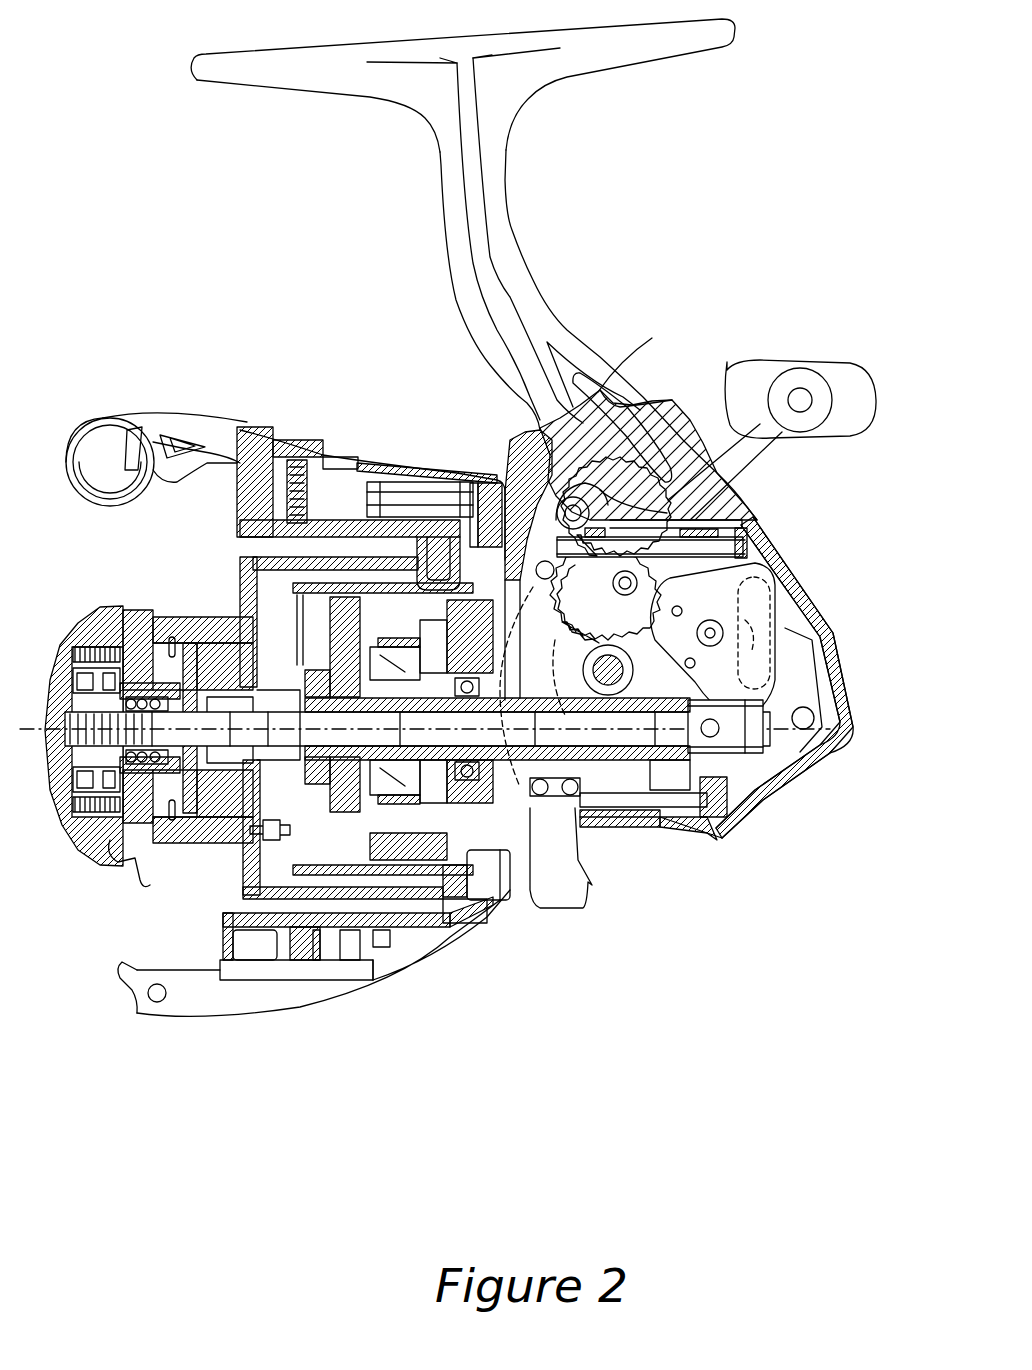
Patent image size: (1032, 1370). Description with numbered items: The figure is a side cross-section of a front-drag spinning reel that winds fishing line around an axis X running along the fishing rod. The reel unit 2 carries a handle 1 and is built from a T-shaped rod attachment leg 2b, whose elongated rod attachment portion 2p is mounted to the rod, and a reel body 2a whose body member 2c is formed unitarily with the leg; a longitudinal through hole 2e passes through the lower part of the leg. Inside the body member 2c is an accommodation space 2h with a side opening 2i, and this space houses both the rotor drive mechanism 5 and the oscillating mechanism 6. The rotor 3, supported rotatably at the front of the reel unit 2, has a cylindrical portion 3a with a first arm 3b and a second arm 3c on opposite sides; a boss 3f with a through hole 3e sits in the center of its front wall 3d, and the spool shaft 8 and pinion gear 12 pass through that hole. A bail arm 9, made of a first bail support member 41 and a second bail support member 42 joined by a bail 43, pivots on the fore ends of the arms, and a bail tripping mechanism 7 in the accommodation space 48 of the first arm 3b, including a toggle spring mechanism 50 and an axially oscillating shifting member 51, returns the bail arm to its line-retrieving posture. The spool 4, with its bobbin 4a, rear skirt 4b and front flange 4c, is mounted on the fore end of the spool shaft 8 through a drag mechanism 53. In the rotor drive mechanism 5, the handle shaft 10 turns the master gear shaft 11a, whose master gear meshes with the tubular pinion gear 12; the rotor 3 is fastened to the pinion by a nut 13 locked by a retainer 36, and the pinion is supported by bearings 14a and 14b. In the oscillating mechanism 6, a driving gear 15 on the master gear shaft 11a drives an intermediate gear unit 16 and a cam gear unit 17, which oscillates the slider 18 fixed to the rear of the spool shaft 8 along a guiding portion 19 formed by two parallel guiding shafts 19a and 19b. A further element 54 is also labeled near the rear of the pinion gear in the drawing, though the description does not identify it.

The handle 1 is at (765, 443).
The reel unit 2 is at (620, 340).
The reel body 2a is at (852, 683).
The rod attachment leg 2b is at (514, 249).
The body member 2c is at (465, 378).
The through hole 2e is at (640, 377).
The accommodation space 2h is at (843, 733).
The opening 2i is at (793, 750).
The rod attachment portion 2p is at (635, 48).
The rotor 3 is at (505, 933).
The cylindrical portion 3a is at (372, 500).
The first arm 3b is at (233, 525).
The second arm 3c is at (330, 933).
The front wall 3d is at (333, 607).
The through hole 3e is at (276, 826).
The boss 3f is at (407, 900).
The spool 4 is at (168, 850).
The bobbin 4a is at (208, 840).
The skirt 4b is at (303, 887).
The front flange 4c is at (113, 867).
The rotor drive mechanism 5 is at (550, 577).
The oscillating mechanism 6 is at (740, 830).
The bail tripping mechanism 7 is at (427, 480).
The spool shaft 8 is at (507, 883).
The bail arm 9 is at (97, 514).
The handle shaft 10 is at (707, 838).
The master gear shaft 11a is at (573, 813).
The pinion gear 12 is at (543, 905).
The nut 13 is at (300, 700).
The bearing 14a is at (453, 920).
The bearing 14b is at (580, 880).
The driving gear 15 is at (663, 833).
The intermediate gear unit 16 is at (657, 462).
The cam gear unit 17 is at (760, 810).
The slider 18 is at (763, 597).
The guiding portion 19 is at (866, 499).
The guiding shaft 19a is at (757, 517).
The guiding shaft 19b is at (780, 600).
The retainer 36 is at (320, 900).
The first bail support member 41 is at (178, 418).
The second bail support member 42 is at (245, 1000).
The bail 43 is at (118, 426).
The accommodation space 48 is at (362, 462).
The toggle spring mechanism 50 is at (403, 497).
The shifting member 51 is at (468, 537).
The drag mechanism 53 is at (110, 840).
The anti-reverse mechanism 54 is at (507, 927).
The axis X is at (243, 790).